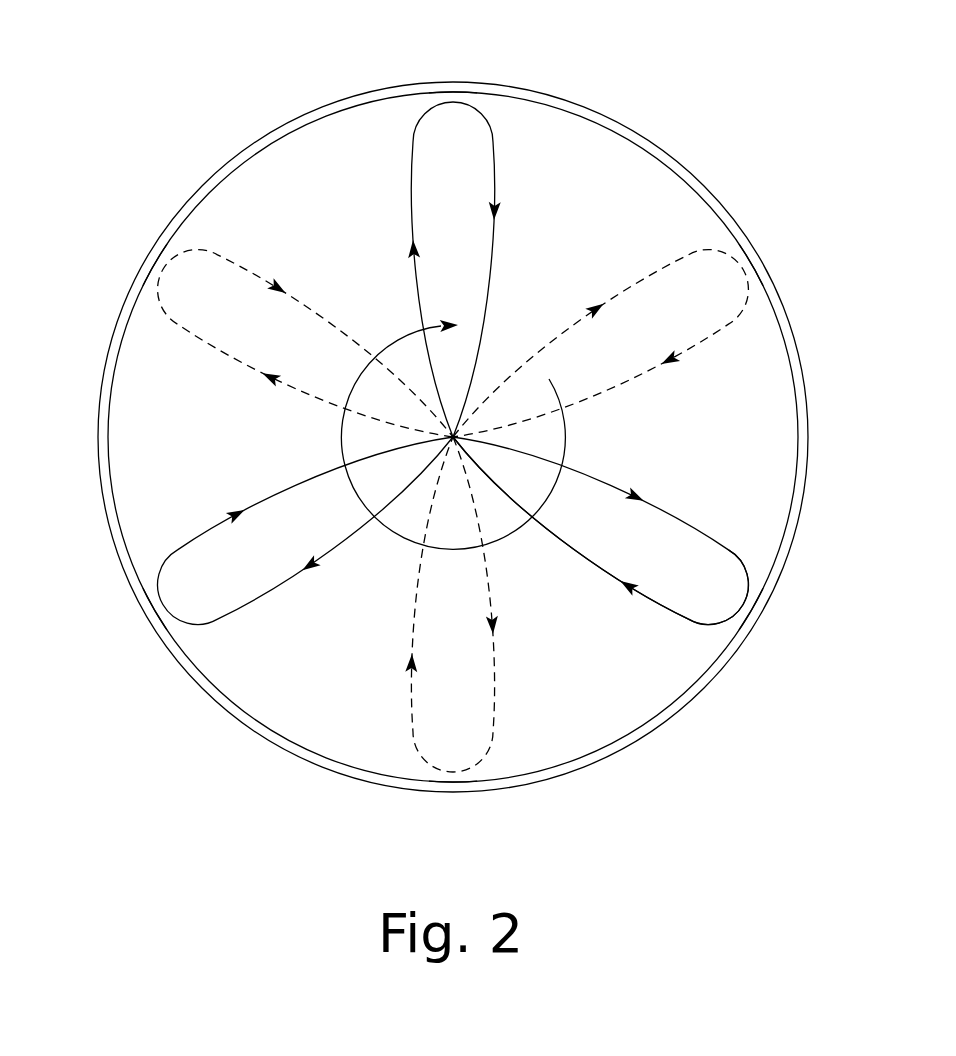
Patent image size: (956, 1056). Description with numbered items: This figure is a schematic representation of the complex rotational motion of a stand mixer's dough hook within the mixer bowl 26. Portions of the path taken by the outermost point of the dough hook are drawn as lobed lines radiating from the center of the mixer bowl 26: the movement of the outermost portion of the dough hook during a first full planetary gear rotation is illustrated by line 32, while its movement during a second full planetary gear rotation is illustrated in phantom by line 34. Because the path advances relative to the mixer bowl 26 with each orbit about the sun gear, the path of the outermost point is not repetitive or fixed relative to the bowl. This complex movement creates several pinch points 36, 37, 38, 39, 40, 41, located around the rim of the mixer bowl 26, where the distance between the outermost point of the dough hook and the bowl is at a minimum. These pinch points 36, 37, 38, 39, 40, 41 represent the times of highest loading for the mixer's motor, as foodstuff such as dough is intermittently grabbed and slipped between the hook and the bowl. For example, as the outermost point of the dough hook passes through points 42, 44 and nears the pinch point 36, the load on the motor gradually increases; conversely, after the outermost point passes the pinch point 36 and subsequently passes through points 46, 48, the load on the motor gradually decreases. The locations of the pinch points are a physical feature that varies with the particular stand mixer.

The mixer bowl 26 is at (644, 133).
The line 32 is at (485, 118).
The line 34 is at (723, 252).
The pinch point 36 is at (755, 612).
The pinch point 37 is at (457, 798).
The pinch point 38 is at (143, 618).
The pinch point 39 is at (146, 265).
The pinch point 40 is at (453, 88).
The pinch point 41 is at (760, 256).
The point 42 is at (720, 528).
The point 44 is at (748, 557).
The point 46 is at (718, 635).
The point 48 is at (665, 630).